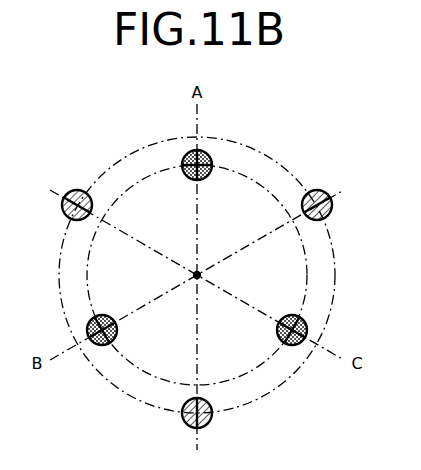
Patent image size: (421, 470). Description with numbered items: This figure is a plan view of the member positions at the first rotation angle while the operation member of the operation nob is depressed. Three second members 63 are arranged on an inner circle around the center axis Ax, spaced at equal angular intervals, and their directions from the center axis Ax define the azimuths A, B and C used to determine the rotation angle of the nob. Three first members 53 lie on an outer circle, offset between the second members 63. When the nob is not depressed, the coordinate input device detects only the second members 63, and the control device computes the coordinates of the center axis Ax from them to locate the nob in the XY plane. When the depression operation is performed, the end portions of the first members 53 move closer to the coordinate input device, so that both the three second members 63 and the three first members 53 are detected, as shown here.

The first member 53 is at (80, 190).
The second member 63 is at (210, 153).
The center axis Ax is at (200, 275).